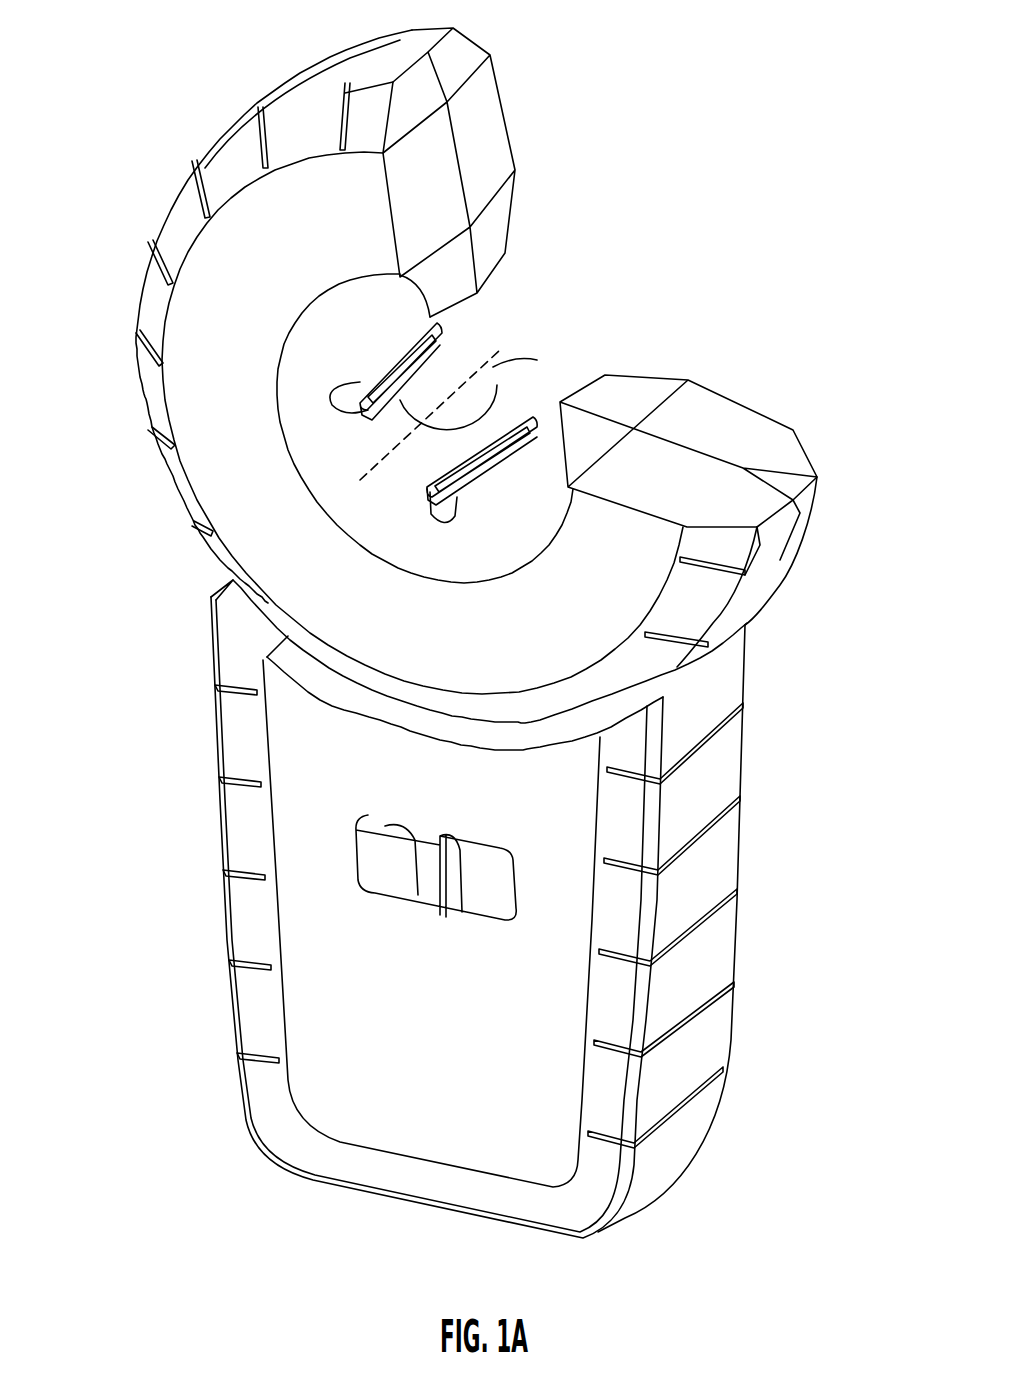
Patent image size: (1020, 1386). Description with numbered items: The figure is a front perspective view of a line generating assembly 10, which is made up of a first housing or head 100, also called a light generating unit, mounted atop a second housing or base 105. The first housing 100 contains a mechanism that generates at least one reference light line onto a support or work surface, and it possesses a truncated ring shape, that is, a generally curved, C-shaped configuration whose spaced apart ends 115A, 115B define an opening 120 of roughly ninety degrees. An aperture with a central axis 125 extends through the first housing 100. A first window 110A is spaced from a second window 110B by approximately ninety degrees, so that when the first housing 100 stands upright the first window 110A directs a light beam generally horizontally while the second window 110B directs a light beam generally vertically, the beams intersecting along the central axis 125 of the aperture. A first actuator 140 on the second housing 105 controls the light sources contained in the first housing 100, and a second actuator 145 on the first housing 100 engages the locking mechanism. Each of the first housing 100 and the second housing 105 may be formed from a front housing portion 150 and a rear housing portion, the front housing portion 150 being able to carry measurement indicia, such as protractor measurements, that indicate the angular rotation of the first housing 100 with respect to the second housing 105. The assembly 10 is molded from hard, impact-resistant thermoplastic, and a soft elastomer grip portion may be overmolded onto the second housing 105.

The line generating assembly 10 is at (806, 152).
The first housing 100 is at (130, 403).
The second housing 105 is at (210, 913).
The first window 110A is at (428, 338).
The second window 110B is at (492, 425).
The end 115A is at (483, 103).
The end 115B is at (742, 430).
The opening 120 is at (647, 393).
The central axis 125 is at (400, 443).
The first actuator 140 is at (453, 877).
The second actuator 145 is at (775, 572).
The front housing portion 150 is at (590, 606).